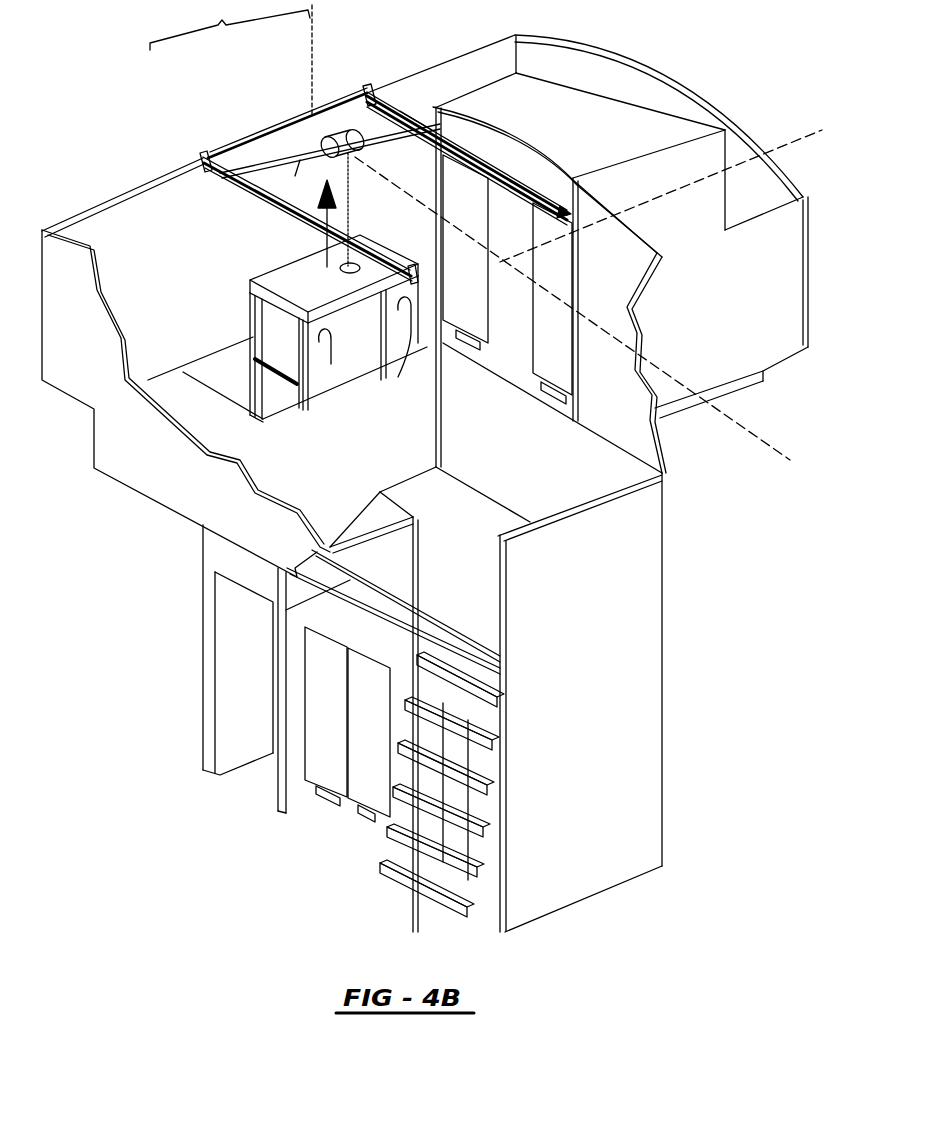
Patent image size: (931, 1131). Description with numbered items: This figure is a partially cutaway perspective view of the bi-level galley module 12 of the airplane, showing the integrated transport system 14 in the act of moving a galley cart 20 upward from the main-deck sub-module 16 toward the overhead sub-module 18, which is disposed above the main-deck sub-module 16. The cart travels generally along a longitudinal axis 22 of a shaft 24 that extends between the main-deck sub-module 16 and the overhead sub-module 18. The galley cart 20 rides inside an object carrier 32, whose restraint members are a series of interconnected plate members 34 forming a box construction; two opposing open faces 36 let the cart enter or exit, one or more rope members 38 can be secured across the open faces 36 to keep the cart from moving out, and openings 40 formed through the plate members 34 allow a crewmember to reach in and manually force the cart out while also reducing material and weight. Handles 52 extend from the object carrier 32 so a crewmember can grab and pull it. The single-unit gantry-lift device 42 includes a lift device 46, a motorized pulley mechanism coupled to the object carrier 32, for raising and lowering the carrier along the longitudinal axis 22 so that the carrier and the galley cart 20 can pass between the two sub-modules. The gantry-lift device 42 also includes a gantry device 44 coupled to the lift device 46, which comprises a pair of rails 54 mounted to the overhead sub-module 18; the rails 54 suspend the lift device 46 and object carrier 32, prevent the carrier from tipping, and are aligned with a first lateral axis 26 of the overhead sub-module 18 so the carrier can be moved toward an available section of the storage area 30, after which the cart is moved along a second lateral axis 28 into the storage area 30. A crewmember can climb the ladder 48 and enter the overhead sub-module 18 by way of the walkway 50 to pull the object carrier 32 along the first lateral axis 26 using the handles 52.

The bi-level galley module 12 is at (115, 92).
The integrated transport system 14 is at (332, 46).
The main-deck sub-module 16 is at (668, 866).
The overhead sub-module 18 is at (42, 228).
The galley cart 20 is at (455, 212).
The longitudinal axis 22 is at (318, 44).
The shaft 24 is at (232, 673).
The first lateral axis 26 is at (748, 432).
The second lateral axis 28 is at (801, 141).
The storage area 30 is at (279, 496).
The object carrier 32 is at (336, 253).
The plate members 34 is at (250, 308).
The open faces 36 is at (253, 380).
The rope members 38 is at (292, 385).
The openings 40 is at (267, 274).
The single-unit gantry-lift device 42 is at (279, 121).
The gantry device 44 is at (425, 132).
The lift device 46 is at (318, 138).
The ladder 48 is at (452, 908).
The walkway 50 is at (446, 553).
The handles 52 is at (335, 360).
The rails 54 is at (200, 160).